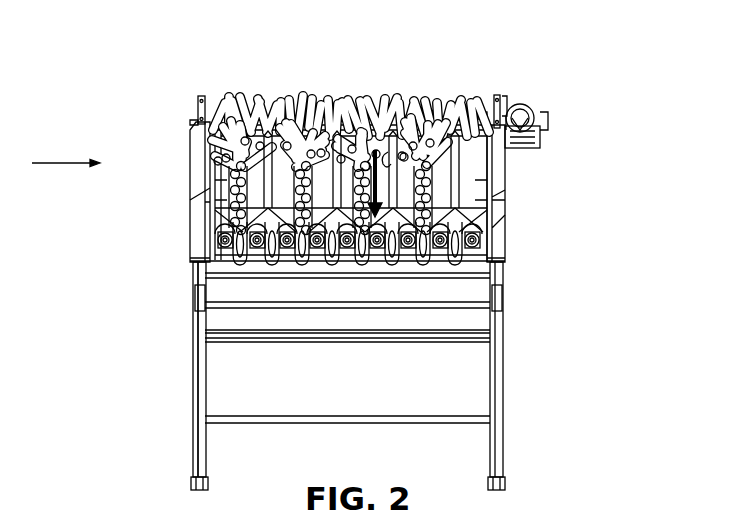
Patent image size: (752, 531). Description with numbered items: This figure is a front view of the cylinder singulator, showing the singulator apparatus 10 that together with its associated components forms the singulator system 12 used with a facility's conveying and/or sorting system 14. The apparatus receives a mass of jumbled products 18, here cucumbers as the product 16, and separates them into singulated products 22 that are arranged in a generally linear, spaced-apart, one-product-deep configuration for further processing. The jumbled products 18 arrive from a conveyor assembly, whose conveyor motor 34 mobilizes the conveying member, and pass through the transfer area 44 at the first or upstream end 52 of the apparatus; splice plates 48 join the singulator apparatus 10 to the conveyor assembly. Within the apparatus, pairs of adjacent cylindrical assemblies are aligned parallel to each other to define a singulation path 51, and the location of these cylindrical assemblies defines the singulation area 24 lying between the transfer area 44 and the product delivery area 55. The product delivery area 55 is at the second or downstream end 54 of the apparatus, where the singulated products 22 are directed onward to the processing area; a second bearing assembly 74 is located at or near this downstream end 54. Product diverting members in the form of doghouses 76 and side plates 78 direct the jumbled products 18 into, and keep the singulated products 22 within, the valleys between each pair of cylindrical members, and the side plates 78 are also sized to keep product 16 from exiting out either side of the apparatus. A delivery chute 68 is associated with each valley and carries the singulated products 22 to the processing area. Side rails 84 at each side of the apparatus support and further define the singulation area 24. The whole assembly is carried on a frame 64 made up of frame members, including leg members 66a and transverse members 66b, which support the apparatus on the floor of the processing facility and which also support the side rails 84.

The singulator apparatus 10 is at (540, 157).
The singulator system 12 is at (53, 159).
The conveying and/or sorting system 14 is at (582, 80).
The product 16 is at (376, 106).
The jumbled products 18 is at (254, 106).
The singulated products 22 is at (434, 205).
The singulation area 24 is at (468, 178).
The conveyor motor 34 is at (522, 106).
The transfer area 44 is at (453, 91).
The splice plates 48 is at (197, 110).
The singulation path 51 is at (384, 163).
The first or upstream end 52 is at (180, 120).
The second or downstream end 54 is at (177, 256).
The product delivery area 55 is at (468, 270).
The frame 64 is at (503, 390).
The leg members 66a is at (196, 388).
The transverse members 66b is at (345, 341).
The delivery chute 68 is at (267, 263).
The second bearing assembly 74 is at (478, 242).
The doghouses 76 is at (260, 190).
The side plates 78 is at (217, 205).
The side rails 84 is at (205, 150).